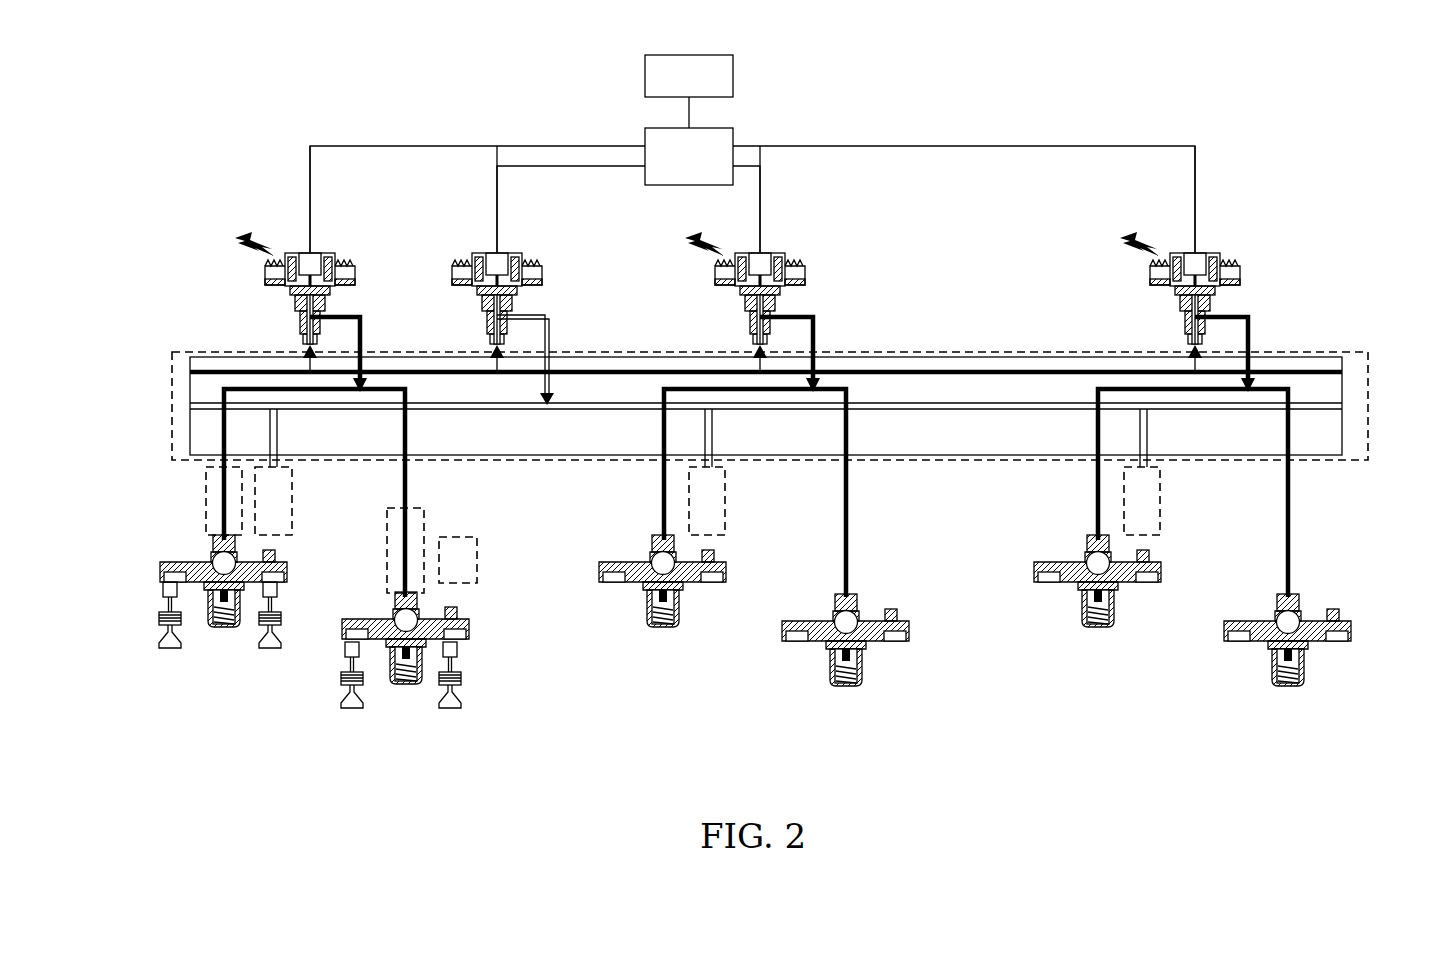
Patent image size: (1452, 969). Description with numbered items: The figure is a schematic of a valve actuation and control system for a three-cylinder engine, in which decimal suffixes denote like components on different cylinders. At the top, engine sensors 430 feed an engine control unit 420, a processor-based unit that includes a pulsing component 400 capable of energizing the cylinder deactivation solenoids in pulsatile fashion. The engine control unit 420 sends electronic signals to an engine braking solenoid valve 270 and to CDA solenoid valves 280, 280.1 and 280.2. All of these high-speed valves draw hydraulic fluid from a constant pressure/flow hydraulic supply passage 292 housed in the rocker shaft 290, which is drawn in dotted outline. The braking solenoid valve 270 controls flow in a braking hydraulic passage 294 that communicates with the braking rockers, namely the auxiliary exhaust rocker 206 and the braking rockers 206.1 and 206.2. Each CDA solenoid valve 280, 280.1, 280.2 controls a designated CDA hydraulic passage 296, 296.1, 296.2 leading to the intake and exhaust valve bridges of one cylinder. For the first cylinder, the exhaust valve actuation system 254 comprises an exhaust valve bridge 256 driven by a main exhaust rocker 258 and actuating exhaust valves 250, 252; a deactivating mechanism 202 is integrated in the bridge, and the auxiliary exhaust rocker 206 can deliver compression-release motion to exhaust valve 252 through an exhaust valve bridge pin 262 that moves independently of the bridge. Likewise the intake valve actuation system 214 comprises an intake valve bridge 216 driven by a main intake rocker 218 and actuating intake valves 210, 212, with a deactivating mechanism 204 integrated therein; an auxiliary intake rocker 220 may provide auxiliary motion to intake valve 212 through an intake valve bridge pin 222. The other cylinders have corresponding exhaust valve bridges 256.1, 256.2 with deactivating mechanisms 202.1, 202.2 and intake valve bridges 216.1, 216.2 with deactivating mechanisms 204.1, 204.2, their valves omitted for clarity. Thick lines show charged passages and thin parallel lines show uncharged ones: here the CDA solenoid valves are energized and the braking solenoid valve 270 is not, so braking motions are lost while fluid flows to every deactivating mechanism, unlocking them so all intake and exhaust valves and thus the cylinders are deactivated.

The pulsing component 400 is at (745, 112).
The engine sensors 430 is at (645, 78).
The engine control unit 420 is at (645, 138).
The CDA solenoid valve 280 is at (335, 257).
The engine braking solenoid valve 270 is at (520, 257).
The CDA solenoid valve 280.1 is at (806, 270).
The CDA solenoid valve 280.2 is at (1241, 270).
The rocker shaft 290 is at (963, 354).
The hydraulic supply passage 292 is at (410, 372).
The braking hydraulic passage 294 is at (610, 403).
The CDA hydraulic passage 296 is at (250, 389).
The CDA hydraulic passage 296.1 is at (700, 389).
The CDA hydraulic passage 296.2 is at (1135, 389).
The main exhaust rocker 258 is at (206, 499).
The auxiliary exhaust rocker 206 is at (292, 500).
The main intake rocker 218 is at (424, 515).
The auxiliary intake rocker 220 is at (477, 560).
The braking rocker 206.1 is at (725, 500).
The braking rocker 206.2 is at (1160, 500).
The exhaust valve actuation system 254 is at (172, 725).
The exhaust valve bridge 256 is at (288, 572).
The deactivating mechanism 202 is at (224, 627).
The exhaust valve bridge pin 262 is at (276, 559).
The exhaust valve 250 is at (170, 650).
The exhaust valve 252 is at (272, 650).
The intake valve actuation system 214 is at (393, 772).
The intake valve bridge 216 is at (468, 632).
The deactivating mechanism 204 is at (406, 687).
The intake valve bridge pin 222 is at (458, 619).
The intake valve 210 is at (352, 710).
The intake valve 212 is at (452, 710).
The exhaust valve bridge 256.1 is at (727, 572).
The deactivating mechanism 202.1 is at (663, 627).
The intake valve bridge 216.1 is at (910, 632).
The deactivating mechanism 204.1 is at (846, 688).
The exhaust valve bridge 256.2 is at (1162, 572).
The deactivating mechanism 202.2 is at (1098, 627).
The intake valve bridge 216.2 is at (1352, 632).
The deactivating mechanism 204.2 is at (1288, 688).